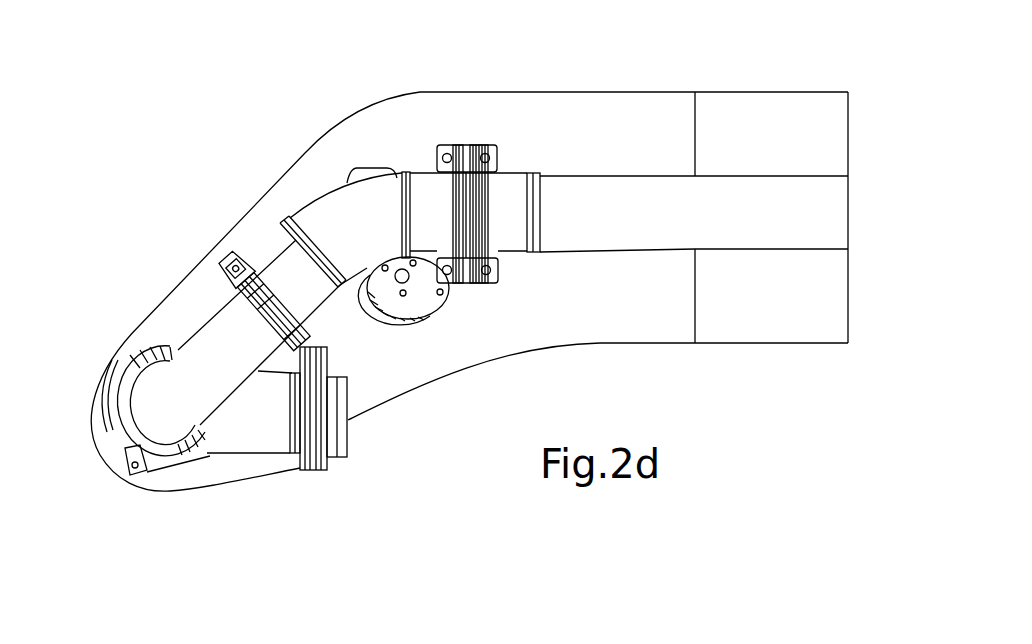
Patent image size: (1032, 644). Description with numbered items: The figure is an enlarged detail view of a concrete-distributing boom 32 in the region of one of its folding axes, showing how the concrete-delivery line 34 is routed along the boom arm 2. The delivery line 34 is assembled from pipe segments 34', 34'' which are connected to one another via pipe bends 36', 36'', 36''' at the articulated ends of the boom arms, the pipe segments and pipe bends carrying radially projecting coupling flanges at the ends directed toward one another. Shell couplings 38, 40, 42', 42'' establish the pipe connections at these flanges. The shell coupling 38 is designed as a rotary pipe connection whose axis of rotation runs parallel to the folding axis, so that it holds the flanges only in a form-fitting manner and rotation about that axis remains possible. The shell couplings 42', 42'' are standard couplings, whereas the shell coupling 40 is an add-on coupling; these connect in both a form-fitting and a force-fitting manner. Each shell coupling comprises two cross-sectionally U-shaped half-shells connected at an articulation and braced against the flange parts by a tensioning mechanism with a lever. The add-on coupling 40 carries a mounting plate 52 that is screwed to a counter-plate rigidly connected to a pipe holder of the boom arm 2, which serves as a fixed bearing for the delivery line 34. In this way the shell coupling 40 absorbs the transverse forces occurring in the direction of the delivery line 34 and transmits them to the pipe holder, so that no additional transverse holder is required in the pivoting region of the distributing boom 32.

The boom arm 2 is at (565, 125).
The concrete-distributing boom 32 is at (698, 95).
The concrete-delivery line 34 is at (771, 188).
The pipe segment 34' is at (617, 189).
The pipe segment 34'' is at (376, 400).
The pipe bend 36' is at (341, 177).
The pipe bend 36'' is at (242, 306).
The pipe bend 36''' is at (249, 465).
The shell coupling designed as rotary pipe connection 38 is at (128, 372).
The shell coupling designed as add-on coupling 40 is at (483, 195).
The shell coupling designed as standard coupling 42' is at (251, 235).
The shell coupling designed as standard coupling 42'' is at (335, 428).
The mounting plate 52 is at (437, 145).